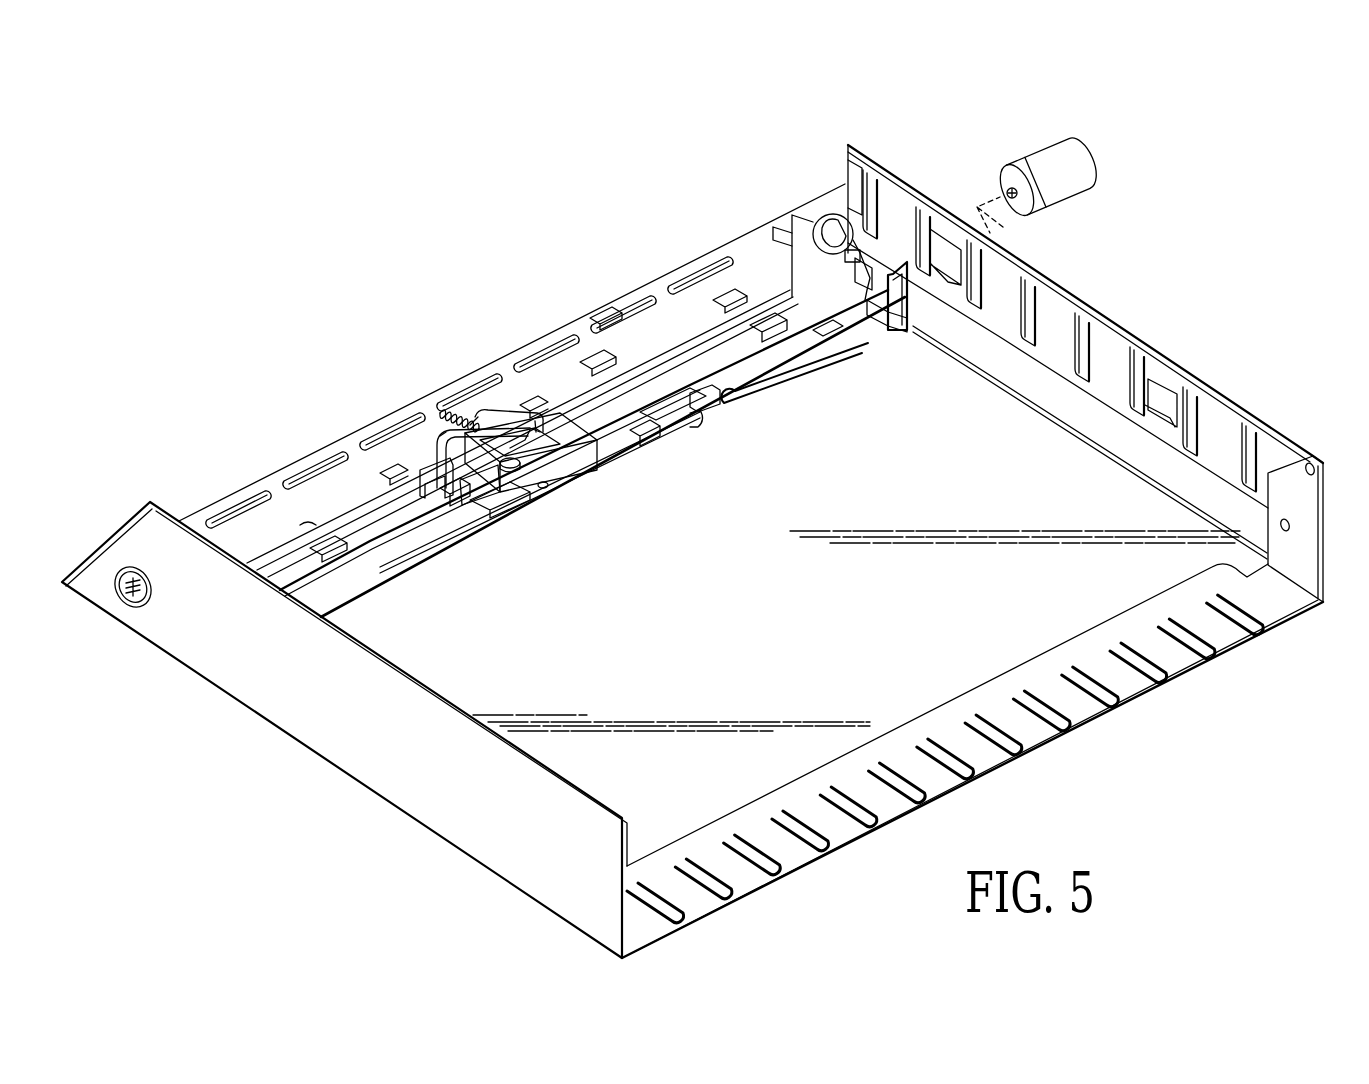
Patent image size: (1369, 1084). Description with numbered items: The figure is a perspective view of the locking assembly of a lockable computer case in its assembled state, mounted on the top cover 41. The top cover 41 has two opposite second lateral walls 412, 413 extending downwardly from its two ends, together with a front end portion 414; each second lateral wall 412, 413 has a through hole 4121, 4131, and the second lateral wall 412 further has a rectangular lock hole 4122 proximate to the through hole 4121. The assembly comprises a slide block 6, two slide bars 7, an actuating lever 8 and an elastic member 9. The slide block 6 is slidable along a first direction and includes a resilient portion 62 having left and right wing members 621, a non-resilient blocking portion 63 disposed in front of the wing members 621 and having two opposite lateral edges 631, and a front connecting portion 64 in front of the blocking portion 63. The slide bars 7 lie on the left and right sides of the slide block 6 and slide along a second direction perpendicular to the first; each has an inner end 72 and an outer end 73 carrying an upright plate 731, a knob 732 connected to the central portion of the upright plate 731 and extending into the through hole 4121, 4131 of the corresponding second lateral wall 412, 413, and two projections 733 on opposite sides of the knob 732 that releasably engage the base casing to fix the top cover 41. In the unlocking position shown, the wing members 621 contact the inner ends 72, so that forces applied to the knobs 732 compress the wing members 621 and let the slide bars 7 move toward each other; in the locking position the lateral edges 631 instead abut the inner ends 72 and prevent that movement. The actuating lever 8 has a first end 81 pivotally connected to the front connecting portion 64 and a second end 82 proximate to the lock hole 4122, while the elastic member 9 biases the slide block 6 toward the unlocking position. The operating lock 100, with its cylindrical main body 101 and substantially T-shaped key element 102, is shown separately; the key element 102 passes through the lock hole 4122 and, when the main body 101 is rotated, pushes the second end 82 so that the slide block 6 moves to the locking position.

The top cover 41 is at (1120, 580).
The second lateral wall 412 is at (1108, 337).
The through hole 4121 is at (820, 200).
The lock hole 4122 is at (880, 345).
The second lateral wall 413 is at (305, 710).
The through hole 4131 is at (150, 608).
The front end portion 414 is at (1300, 595).
The slide block 6 is at (418, 444).
The resilient portion 62 is at (470, 418).
The wing members 621 is at (514, 410).
The non-resilient blocking portion 63 is at (488, 492).
The lateral edges 631 is at (458, 508).
The front connecting portion 64 is at (560, 496).
The slide bars 7 is at (266, 546).
The inner end 72 is at (385, 476).
The outer end 73 is at (795, 262).
The upright plate 731 is at (790, 242).
The knob 732 is at (112, 605).
The projections 733 is at (880, 250).
The actuating lever 8 is at (692, 428).
The first end 81 is at (520, 520).
The second end 82 is at (902, 300).
The elastic member 9 is at (443, 404).
The operating lock 100 is at (1095, 145).
The main body 101 is at (1078, 182).
The key element 102 is at (1008, 190).